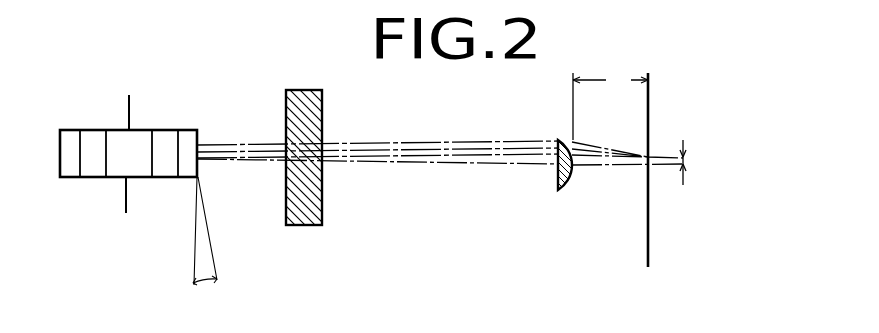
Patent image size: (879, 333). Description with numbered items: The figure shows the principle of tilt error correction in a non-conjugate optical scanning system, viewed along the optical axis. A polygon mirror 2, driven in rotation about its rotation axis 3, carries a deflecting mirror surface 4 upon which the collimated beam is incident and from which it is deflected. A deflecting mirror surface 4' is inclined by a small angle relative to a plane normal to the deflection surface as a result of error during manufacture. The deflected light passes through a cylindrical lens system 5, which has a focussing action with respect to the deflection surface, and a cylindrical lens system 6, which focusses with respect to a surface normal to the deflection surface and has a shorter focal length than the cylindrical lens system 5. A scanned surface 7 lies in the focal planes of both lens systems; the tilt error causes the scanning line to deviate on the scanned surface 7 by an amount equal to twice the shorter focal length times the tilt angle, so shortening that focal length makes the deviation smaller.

The polygon mirror 2 is at (136, 167).
The rotation axis 3 is at (130, 112).
The deflecting mirror surface 4 is at (439, 132).
The deflecting mirror surface inclined with tilt error 4' is at (438, 237).
The cylindrical lens system 5 is at (300, 218).
The cylindrical lens system 6 is at (557, 177).
The scanned surface 7 is at (648, 235).